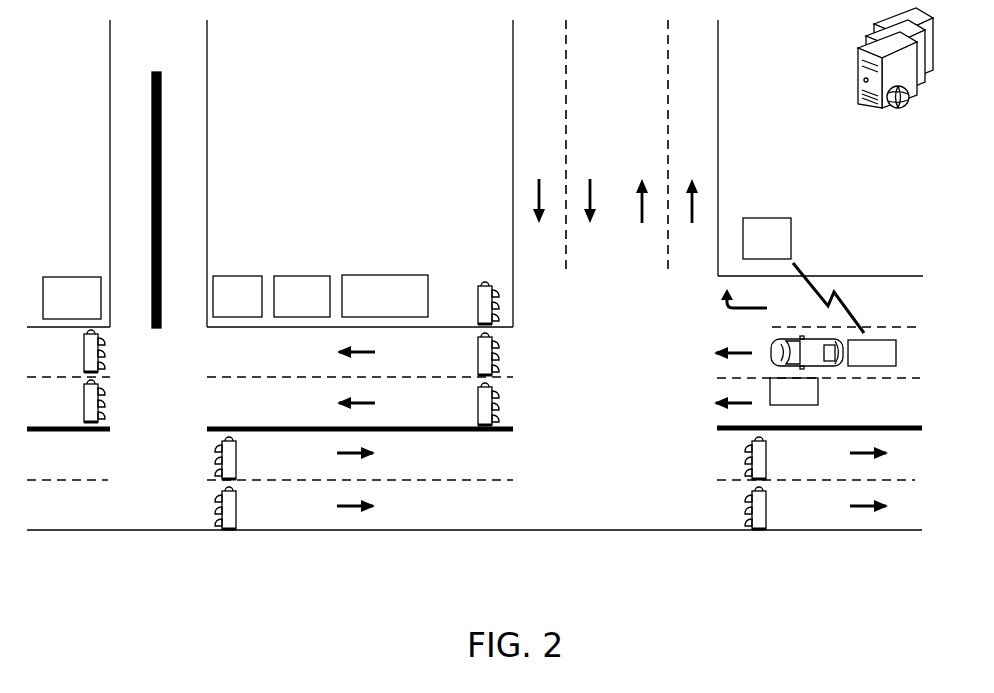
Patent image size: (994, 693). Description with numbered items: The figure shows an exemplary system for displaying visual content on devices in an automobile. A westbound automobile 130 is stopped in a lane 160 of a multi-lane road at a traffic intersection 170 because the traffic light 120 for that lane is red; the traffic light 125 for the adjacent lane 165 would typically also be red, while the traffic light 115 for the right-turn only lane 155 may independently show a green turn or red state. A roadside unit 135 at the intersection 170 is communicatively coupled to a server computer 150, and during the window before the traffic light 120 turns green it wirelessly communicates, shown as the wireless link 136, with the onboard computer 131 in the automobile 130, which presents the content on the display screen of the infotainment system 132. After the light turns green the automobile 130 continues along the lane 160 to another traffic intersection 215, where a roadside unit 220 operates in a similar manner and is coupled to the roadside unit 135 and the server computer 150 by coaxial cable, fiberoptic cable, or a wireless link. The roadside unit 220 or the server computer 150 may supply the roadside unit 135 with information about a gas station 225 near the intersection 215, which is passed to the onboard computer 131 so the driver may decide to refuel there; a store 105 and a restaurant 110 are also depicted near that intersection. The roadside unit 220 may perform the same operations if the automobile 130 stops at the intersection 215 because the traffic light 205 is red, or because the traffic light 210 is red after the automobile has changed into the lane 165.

The store 105 is at (293, 277).
The restaurant 110 is at (385, 275).
The traffic light 115 is at (478, 301).
The traffic light 120 is at (478, 361).
The traffic light 125 is at (478, 411).
The automobile 130 is at (771, 352).
The onboard computer 131 is at (859, 361).
The infotainment system 132 is at (781, 400).
The roadside unit 135 is at (754, 247).
The wireless communication link 136 is at (864, 301).
The server computer 150 is at (838, 73).
The right-turn only lane 155 is at (931, 308).
The lane 160 is at (291, 362).
The adjacent lane 165 is at (291, 412).
The traffic intersection 170 is at (633, 405).
The traffic light 205 is at (84, 358).
The traffic light 210 is at (84, 408).
The traffic intersection 215 is at (170, 436).
The roadside unit 220 is at (224, 305).
The gas station 225 is at (62, 277).